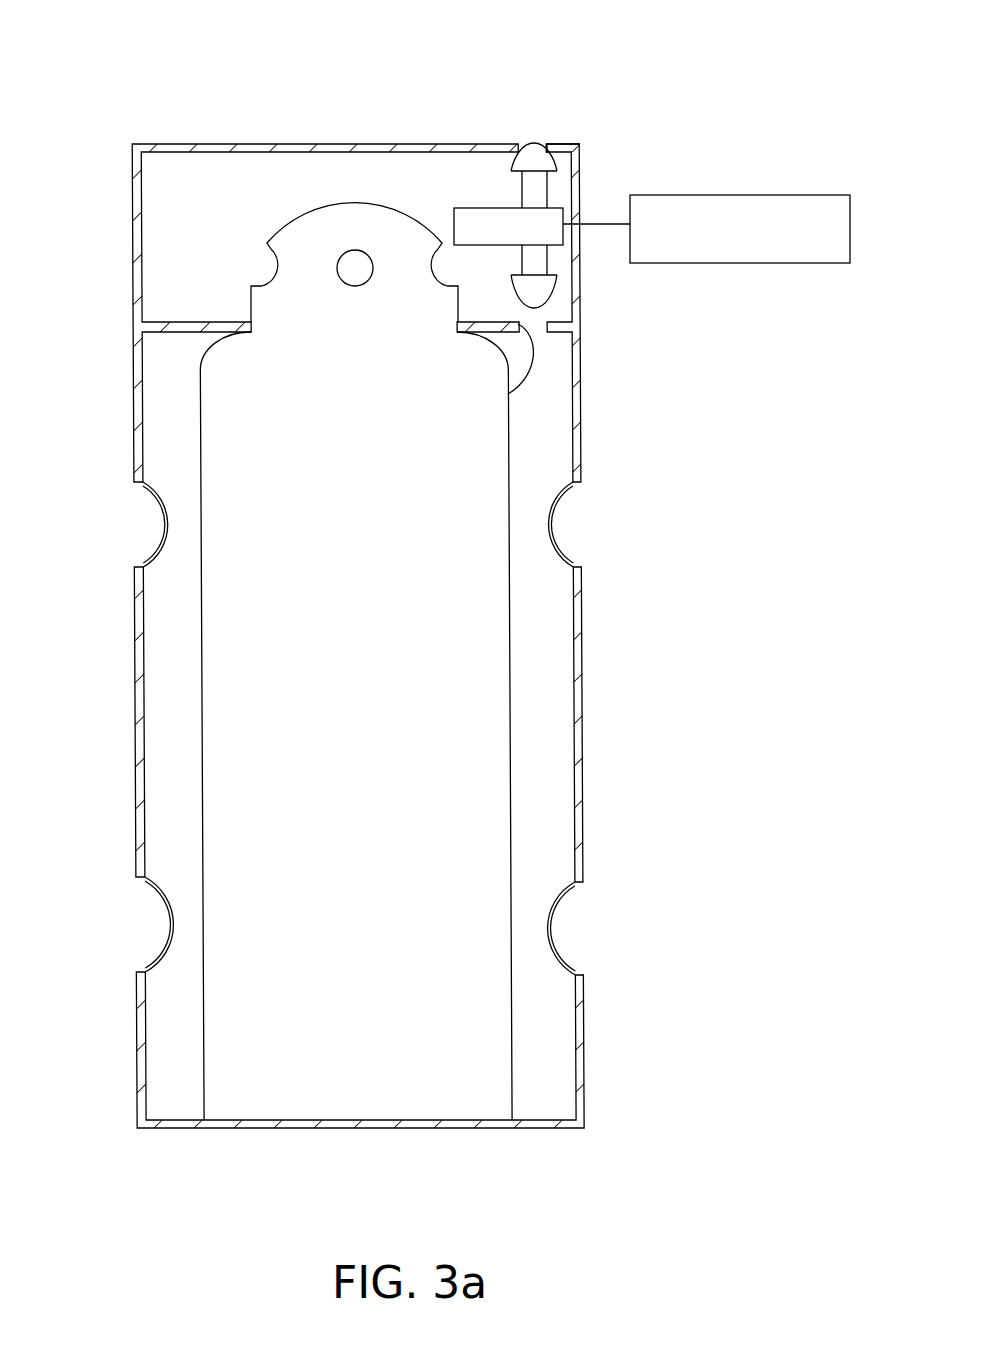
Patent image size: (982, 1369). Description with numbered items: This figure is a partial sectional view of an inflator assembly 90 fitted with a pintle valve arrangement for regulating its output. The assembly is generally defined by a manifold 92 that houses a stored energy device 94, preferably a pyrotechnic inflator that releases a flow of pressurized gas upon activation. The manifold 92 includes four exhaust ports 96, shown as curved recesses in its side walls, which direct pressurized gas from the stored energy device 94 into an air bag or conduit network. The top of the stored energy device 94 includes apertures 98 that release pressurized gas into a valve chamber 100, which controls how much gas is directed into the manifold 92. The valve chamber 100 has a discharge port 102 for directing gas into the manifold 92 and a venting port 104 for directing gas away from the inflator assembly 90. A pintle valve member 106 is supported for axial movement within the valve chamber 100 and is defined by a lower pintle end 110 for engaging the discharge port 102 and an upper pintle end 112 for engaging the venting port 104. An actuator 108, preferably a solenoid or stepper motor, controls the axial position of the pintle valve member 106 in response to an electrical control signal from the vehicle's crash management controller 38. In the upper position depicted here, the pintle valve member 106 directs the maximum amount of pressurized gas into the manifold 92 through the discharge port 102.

The crash management controller (CMC) 38 is at (773, 193).
The inflator assembly 90 is at (703, 687).
The manifold 92 is at (577, 767).
The stored energy device 94 is at (225, 700).
The exhaust ports 96 is at (162, 526).
The apertures 98 is at (268, 278).
The valve chamber 100 is at (371, 166).
The discharge port 102 is at (508, 394).
The venting port 104 is at (541, 160).
The pintle valve member 106 is at (533, 190).
The actuator 108 is at (480, 228).
The lower pintle end 110 is at (533, 293).
The upper pintle end 112 is at (549, 150).